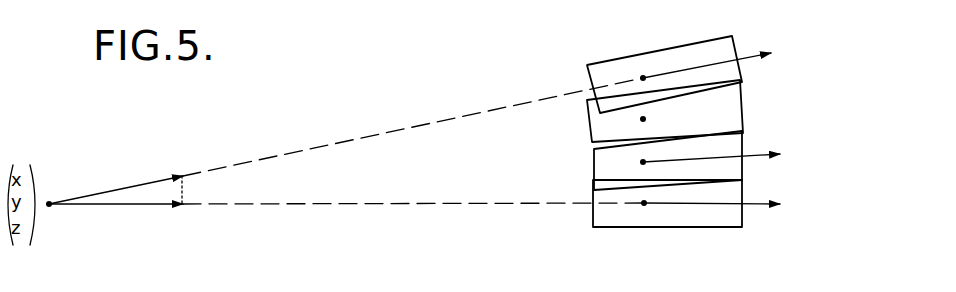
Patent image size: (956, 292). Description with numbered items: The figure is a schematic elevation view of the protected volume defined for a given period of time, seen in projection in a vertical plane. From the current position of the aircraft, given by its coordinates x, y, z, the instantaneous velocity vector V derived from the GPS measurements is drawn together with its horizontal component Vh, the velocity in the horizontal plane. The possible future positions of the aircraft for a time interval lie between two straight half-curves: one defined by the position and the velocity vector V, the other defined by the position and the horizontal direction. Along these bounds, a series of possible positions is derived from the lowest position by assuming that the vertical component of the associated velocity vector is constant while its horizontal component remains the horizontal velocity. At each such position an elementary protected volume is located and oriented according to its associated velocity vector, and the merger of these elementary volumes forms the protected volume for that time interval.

The velocity vector V is at (126, 158).
The horizontal velocity Vh is at (126, 215).